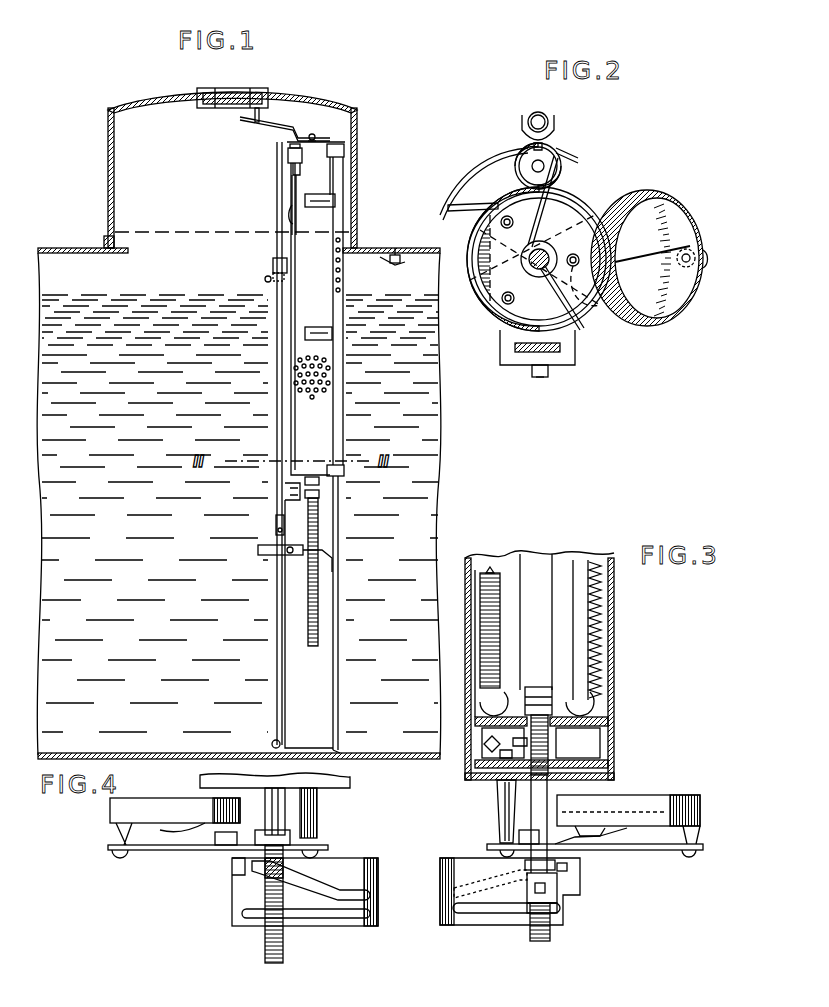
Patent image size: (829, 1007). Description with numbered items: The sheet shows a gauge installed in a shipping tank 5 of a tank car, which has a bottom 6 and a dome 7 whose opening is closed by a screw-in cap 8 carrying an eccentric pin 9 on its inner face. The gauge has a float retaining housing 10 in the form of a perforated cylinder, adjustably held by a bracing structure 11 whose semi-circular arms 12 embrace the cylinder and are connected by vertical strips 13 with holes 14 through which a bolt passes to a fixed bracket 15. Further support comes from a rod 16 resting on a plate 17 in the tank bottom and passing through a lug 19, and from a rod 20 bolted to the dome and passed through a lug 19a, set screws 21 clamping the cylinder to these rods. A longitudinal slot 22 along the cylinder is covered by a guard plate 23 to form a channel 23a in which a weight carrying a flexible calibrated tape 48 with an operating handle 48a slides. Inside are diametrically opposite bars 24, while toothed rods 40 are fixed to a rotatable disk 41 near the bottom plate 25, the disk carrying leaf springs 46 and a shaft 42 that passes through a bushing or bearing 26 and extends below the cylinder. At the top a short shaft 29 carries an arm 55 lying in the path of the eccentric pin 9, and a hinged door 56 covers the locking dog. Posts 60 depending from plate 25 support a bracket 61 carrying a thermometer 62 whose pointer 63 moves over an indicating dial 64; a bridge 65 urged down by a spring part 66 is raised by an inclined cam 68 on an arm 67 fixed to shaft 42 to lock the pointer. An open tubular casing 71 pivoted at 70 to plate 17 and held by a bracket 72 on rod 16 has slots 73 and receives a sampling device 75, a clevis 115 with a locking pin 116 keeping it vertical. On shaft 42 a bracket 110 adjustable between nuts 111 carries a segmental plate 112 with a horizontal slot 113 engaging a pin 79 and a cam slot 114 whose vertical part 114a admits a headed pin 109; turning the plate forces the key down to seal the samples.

In FIG. 1, the shipping tank 5 is at (420, 418).
In FIG. 1, the bottom 6 is at (360, 758).
In FIG. 1, the dome 7 is at (358, 120).
In FIG. 1, the cap 8 is at (260, 96).
In FIG. 1, the eccentric pin 9 is at (278, 127).
In FIG. 1, the float retaining housing 10 is at (333, 182).
In FIG. 4, the float retaining housing 10 is at (352, 785).
In FIG. 2, the float retaining housing 10 is at (590, 192).
In FIG. 3, the float retaining housing 10 is at (613, 642).
In FIG. 1, the bracing structure 11 is at (344, 201).
In FIG. 1, the semi-circular arms 12 is at (344, 223).
In FIG. 1, the vertical strips 13 is at (358, 231).
In FIG. 1, the holes 14 is at (343, 284).
In FIG. 1, the fixed bracket 15 is at (378, 262).
In FIG. 1, the rod 16 is at (340, 515).
In FIG. 2, the rod 16 is at (513, 348).
In FIG. 1, the plate 17 is at (345, 752).
In FIG. 1, the lug 19 is at (345, 470).
In FIG. 2, the lug 19 is at (565, 358).
In FIG. 1, the lug 19a is at (345, 150).
In FIG. 1, the rod 20 is at (338, 167).
In FIG. 2, the set screws 21 is at (532, 373).
In FIG. 2, the longitudinal slot 22 is at (558, 187).
In FIG. 3, the longitudinal slot 22 is at (540, 560).
In FIG. 1, the guard plate 23 is at (296, 386).
In FIG. 2, the guard plate 23 is at (558, 156).
In FIG. 2, the channel 23a is at (530, 162).
In FIG. 3, the bars 24 is at (490, 568).
In FIG. 2, the plate 25 is at (480, 290).
In FIG. 3, the plate 25 is at (613, 776).
In FIG. 3, the bushing or bearing 26 is at (590, 762).
In FIG. 1, the short shaft 29 is at (315, 133).
In FIG. 3, the serrated or toothed rods 40 is at (586, 616).
In FIG. 3, the rotatable disk 41 is at (602, 720).
In FIG. 1, the shaft 42 is at (319, 628).
In FIG. 4, the shaft 42 is at (270, 962).
In FIG. 2, the shaft 42 is at (578, 332).
In FIG. 3, the shaft 42 is at (550, 746).
In FIG. 3, the leaf springs 46 is at (588, 690).
In FIG. 1, the flexible calibrated tape 48 is at (291, 181).
In FIG. 1, the operating handle 48a is at (289, 209).
In FIG. 1, the arm 55 is at (258, 120).
In FIG. 1, the door 56 is at (288, 156).
In FIG. 4, the posts 60 is at (318, 820).
In FIG. 2, the posts 60 is at (500, 222).
In FIG. 3, the posts 60 is at (498, 810).
In FIG. 4, the bracket 61 is at (115, 853).
In FIG. 2, the bracket 61 is at (675, 236).
In FIG. 3, the bracket 61 is at (686, 851).
In FIG. 4, the thermometer 62 is at (110, 815).
In FIG. 2, the thermometer 62 is at (670, 318).
In FIG. 3, the thermometer 62 is at (680, 795).
In FIG. 2, the pointer 63 is at (645, 212).
In FIG. 3, the pointer 63 is at (640, 812).
In FIG. 2, the indicating dial 64 is at (692, 246).
In FIG. 3, the bridge 65 is at (605, 826).
In FIG. 3, the spring part 66 is at (627, 836).
In FIG. 4, the arm 67 is at (262, 841).
In FIG. 2, the arm 67 is at (578, 256).
In FIG. 3, the arm 67 is at (575, 845).
In FIG. 4, the inclined cam 68 is at (222, 841).
In FIG. 2, the inclined cam 68 is at (600, 262).
In FIG. 3, the inclined cam 68 is at (600, 839).
In FIG. 1, the pivot 70 is at (272, 745).
In FIG. 1, the open tubular casing 71 is at (276, 611).
In FIG. 1, the bracket 72 is at (323, 550).
In FIG. 1, the slots 73 is at (275, 530).
In FIG. 1, the sampling device 75 is at (266, 281).
In FIG. 2, the sampling device 75 is at (530, 113).
In FIG. 4, the pin 79 is at (262, 915).
In FIG. 4, the headed pin 109 is at (269, 872).
In FIG. 1, the bracket 110 is at (320, 492).
In FIG. 2, the bracket 110 is at (472, 205).
In FIG. 3, the bracket 110 is at (510, 900).
In FIG. 3, the nuts 111 is at (568, 872).
In FIG. 1, the segmental plate 112 is at (284, 492).
In FIG. 4, the segmental plate 112 is at (365, 927).
In FIG. 2, the segmental plate 112 is at (485, 160).
In FIG. 3, the segmental plate 112 is at (452, 920).
In FIG. 4, the slot 113 is at (330, 925).
In FIG. 3, the slot 113 is at (478, 914).
In FIG. 4, the slot 114 is at (350, 887).
In FIG. 3, the slot 114 is at (462, 858).
In FIG. 4, the vertical part 114a is at (262, 867).
In FIG. 3, the vertical part 114a is at (558, 872).
In FIG. 1, the clevis 115 is at (273, 260).
In FIG. 1, the locking or closing pin 116 is at (272, 275).